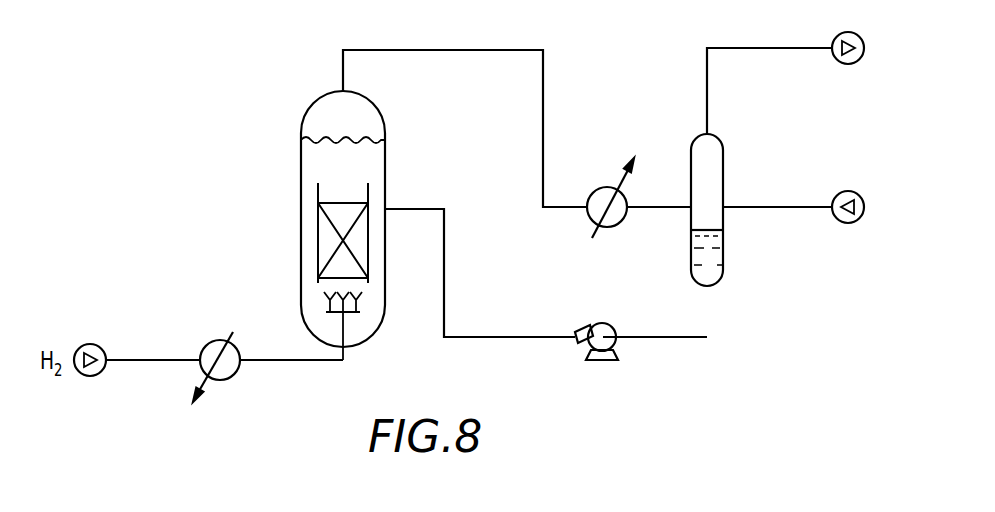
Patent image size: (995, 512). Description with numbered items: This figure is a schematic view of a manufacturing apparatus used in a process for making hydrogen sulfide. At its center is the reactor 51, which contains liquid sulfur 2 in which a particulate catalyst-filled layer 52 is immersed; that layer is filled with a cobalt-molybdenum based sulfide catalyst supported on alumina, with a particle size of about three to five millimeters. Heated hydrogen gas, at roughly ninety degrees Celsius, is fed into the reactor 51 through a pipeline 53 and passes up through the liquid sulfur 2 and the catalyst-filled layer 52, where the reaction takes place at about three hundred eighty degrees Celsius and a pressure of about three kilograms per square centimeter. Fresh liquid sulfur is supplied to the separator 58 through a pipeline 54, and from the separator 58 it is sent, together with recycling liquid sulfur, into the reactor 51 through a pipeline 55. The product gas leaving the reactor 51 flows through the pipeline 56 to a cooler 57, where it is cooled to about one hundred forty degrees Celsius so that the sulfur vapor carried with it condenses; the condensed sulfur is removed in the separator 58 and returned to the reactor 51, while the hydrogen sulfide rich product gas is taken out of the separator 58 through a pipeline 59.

The liquid sulfur 2 is at (383, 168).
The reactor 51 is at (303, 118).
The particulate catalyst-filled layer 52 is at (322, 250).
The pipeline 53 is at (172, 357).
The pipeline 54 is at (771, 209).
The pipeline 55 is at (444, 294).
The pipeline 56 is at (459, 49).
The cooler 57 is at (596, 191).
The separator 58 is at (716, 173).
The pipeline 59 is at (773, 47).